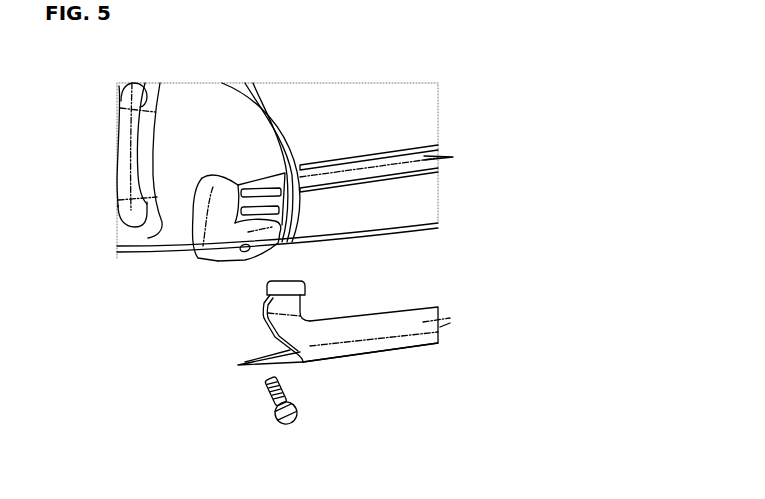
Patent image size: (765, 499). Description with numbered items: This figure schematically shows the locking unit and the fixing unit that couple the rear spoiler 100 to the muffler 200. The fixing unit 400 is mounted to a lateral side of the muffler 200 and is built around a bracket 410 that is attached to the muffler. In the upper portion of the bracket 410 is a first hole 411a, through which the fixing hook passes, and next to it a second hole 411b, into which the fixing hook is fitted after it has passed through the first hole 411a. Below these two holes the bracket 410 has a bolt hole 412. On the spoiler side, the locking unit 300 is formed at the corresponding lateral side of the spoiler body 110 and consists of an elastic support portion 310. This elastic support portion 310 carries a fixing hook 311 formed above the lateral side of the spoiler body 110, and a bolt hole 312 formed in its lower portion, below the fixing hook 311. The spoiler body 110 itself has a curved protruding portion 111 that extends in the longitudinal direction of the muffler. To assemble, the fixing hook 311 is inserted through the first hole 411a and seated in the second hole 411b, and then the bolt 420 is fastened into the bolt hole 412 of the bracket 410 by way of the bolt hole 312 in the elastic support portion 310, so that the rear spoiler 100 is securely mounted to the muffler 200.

The rear spoiler 100 is at (438, 363).
The spoiler body 110 is at (379, 343).
The curved protruding portion 111 is at (365, 355).
The muffler 200 is at (343, 110).
The locking unit 300 is at (218, 349).
The elastic support portion 310 is at (282, 323).
The fixing hook 311 is at (267, 302).
The bolt hole 312 is at (265, 360).
The fixing unit 400 is at (165, 253).
The bracket 410 is at (206, 262).
The first hole 411a is at (205, 223).
The second hole 411b is at (232, 190).
The bolt hole 412 is at (235, 257).
The bolt 420 is at (298, 420).